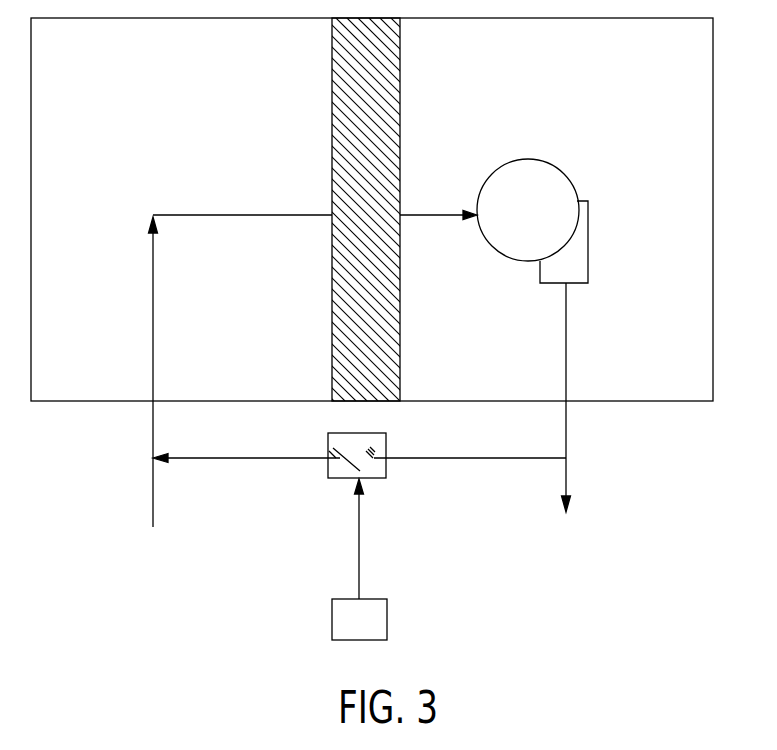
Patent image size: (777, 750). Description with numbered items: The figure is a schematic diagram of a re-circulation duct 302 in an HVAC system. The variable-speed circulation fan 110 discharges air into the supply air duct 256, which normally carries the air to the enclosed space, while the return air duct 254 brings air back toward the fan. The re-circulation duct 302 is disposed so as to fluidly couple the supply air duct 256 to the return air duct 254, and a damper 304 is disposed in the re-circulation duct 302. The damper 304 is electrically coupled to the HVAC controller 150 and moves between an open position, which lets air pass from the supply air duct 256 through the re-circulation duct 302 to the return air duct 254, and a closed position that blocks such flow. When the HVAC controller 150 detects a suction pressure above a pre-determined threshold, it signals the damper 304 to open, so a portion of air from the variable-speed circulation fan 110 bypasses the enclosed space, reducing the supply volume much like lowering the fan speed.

The variable-speed circulation fan 110 is at (571, 186).
The HVAC controller 150 is at (373, 633).
The return air duct 254 is at (153, 360).
The supply air duct 256 is at (567, 362).
The re-circulation duct 302 is at (450, 458).
The damper 304 is at (371, 479).